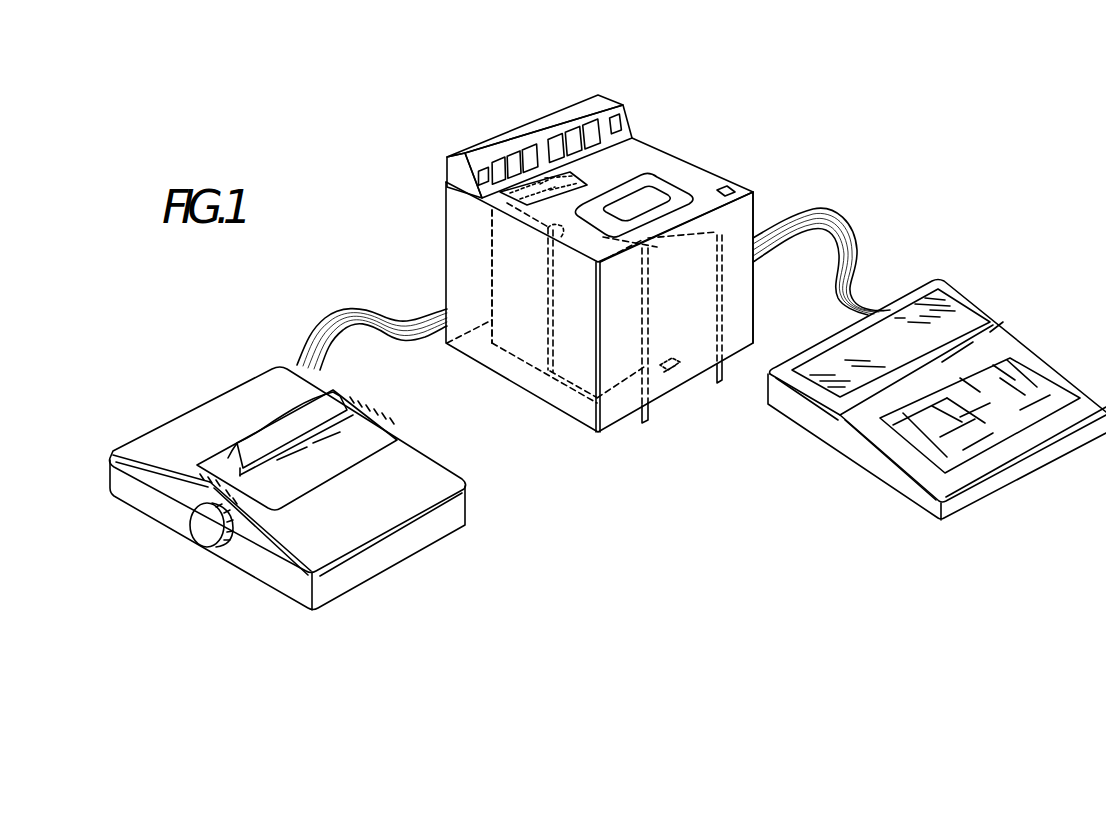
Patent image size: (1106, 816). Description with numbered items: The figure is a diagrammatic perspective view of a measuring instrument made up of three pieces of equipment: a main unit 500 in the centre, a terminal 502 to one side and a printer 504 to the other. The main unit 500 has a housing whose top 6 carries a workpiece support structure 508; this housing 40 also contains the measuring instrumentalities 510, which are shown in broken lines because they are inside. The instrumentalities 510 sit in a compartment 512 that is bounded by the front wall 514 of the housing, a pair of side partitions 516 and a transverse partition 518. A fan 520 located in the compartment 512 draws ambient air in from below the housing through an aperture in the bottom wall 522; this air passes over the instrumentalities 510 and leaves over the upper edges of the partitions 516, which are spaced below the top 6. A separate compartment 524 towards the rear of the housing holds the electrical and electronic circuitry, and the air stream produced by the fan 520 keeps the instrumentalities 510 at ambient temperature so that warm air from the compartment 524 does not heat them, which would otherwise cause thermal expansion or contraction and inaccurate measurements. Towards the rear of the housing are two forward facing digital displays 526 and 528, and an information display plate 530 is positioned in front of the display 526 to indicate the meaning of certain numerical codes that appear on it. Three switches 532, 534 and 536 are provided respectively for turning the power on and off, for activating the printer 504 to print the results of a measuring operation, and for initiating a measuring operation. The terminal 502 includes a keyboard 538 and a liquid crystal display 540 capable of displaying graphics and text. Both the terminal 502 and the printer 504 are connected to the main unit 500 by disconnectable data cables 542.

The main unit 500 is at (425, 242).
The top 6 is at (663, 163).
The housing 40 is at (714, 168).
The terminal 502 is at (1044, 328).
The printer 504 is at (414, 549).
The workpiece support structure 508 is at (660, 195).
The measuring instrumentalities 510 is at (668, 305).
The compartment 512 is at (667, 283).
The front wall 514 is at (737, 217).
The side partitions 516 is at (722, 277).
The transverse partition 518 is at (552, 263).
The fan 520 is at (668, 375).
The bottom wall 522 is at (688, 380).
The compartment 524 is at (530, 260).
The digital display 526 is at (507, 163).
The digital display 528 is at (575, 137).
The information display plate 530 is at (541, 186).
The switch 532 is at (478, 172).
The switch 534 is at (618, 123).
The switch 536 is at (728, 190).
The keyboard 538 is at (997, 418).
The liquid crystal display 540 is at (960, 318).
The data cables 542 is at (318, 336).